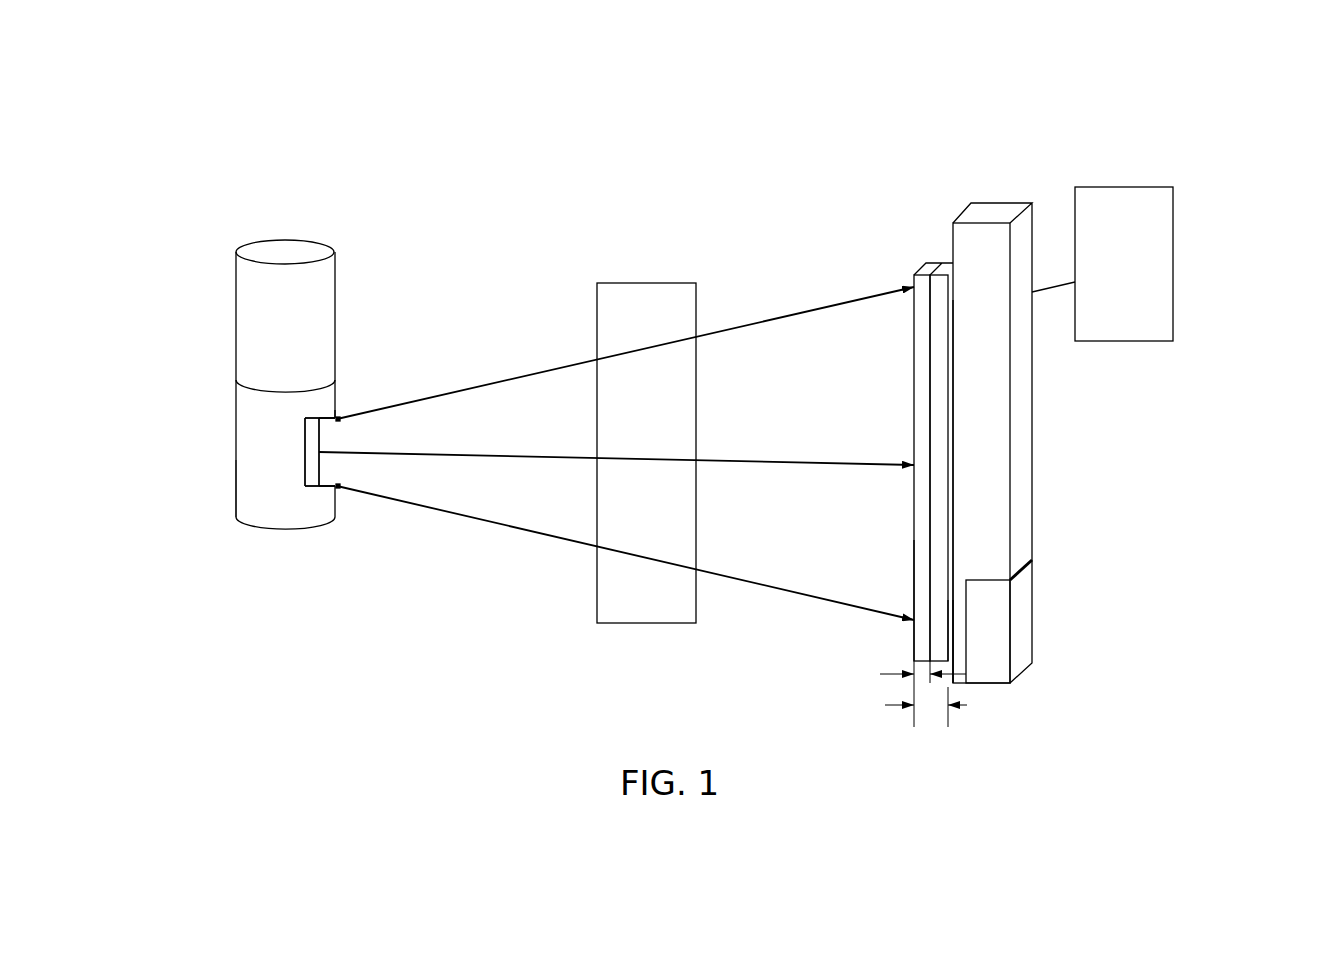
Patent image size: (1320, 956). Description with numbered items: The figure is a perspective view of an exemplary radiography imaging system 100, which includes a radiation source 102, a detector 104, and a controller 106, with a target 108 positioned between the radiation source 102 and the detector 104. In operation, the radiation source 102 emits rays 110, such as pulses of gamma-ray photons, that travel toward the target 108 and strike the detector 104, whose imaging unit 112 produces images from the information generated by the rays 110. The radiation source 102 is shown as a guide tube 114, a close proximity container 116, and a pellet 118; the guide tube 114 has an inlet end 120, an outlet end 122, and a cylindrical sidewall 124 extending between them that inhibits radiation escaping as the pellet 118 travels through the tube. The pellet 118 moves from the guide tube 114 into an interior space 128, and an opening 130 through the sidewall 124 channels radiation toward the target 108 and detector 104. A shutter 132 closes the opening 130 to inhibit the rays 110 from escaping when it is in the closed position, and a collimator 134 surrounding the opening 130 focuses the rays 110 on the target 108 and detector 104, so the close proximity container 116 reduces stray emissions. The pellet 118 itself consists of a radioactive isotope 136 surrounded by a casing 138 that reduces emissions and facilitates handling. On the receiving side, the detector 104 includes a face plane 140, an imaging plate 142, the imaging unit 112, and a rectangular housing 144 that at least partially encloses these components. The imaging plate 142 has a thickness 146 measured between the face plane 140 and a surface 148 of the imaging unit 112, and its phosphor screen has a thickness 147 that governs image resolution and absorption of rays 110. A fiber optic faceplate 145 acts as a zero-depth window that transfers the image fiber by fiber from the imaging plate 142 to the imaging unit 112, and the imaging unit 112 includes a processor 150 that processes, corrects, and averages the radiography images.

The radiography imaging system 100 is at (270, 110).
The radiation source 102 is at (240, 232).
The detector 104 is at (935, 250).
The controller 106 is at (1123, 330).
The target 108 is at (637, 298).
The rays 110 is at (508, 383).
The imaging unit 112 is at (997, 182).
The guide tube 114 is at (245, 288).
The close proximity container 116 is at (267, 497).
The pellet 118 is at (317, 487).
The inlet end 120 is at (292, 250).
The outlet end 122 is at (265, 392).
The sidewall 124 is at (235, 505).
The interior space 128 is at (327, 477).
The opening 130 is at (313, 462).
The shutter 132 is at (302, 418).
The collimator 134 is at (337, 416).
The radioactive isotope 136 is at (297, 460).
The casing 138 is at (312, 437).
The face plane 140 is at (923, 570).
The imaging plate 142 is at (920, 368).
The housing 144 is at (920, 312).
The fiber optic faceplate 145 is at (938, 522).
The thickness 146 is at (965, 706).
The thickness 147 is at (885, 673).
The surface 148 is at (953, 640).
The processor 150 is at (1002, 628).